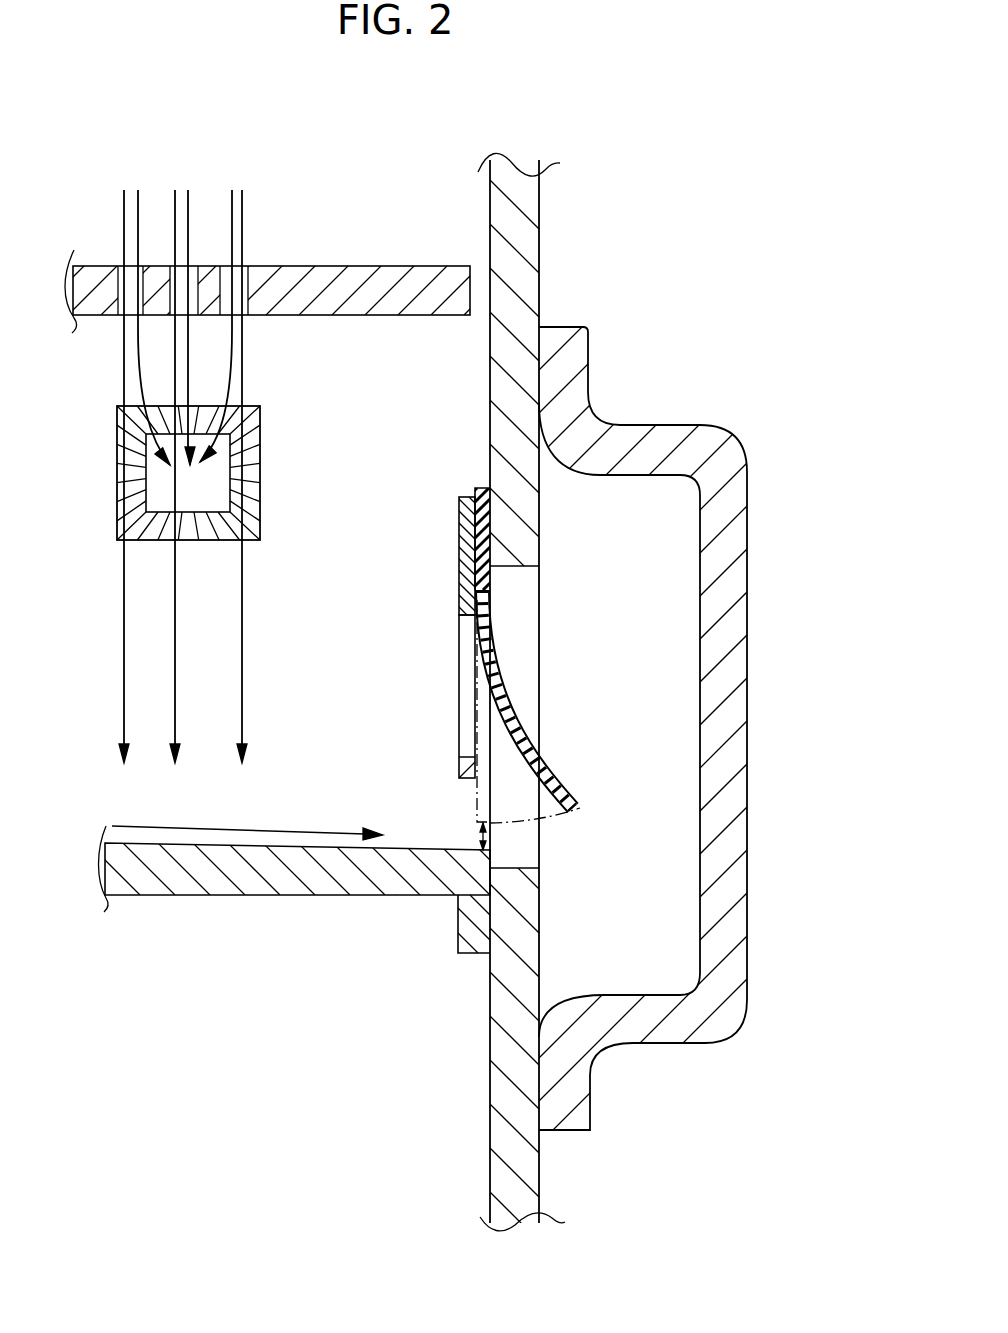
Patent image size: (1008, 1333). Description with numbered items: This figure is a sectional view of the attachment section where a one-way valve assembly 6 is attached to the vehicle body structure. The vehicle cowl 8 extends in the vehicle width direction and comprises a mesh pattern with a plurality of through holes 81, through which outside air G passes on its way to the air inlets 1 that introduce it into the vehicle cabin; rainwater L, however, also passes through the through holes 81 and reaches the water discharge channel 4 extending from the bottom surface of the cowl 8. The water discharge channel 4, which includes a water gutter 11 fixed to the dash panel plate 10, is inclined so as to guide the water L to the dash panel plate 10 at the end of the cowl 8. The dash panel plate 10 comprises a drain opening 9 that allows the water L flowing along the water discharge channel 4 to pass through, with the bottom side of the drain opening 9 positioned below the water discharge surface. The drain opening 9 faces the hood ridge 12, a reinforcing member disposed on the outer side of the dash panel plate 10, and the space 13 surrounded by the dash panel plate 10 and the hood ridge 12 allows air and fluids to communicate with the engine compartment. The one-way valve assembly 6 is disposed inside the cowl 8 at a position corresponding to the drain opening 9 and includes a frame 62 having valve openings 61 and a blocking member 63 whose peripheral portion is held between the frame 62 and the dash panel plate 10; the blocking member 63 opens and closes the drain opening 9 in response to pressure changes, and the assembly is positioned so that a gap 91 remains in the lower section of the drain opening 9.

The air inlet 1 is at (133, 465).
The water discharge channel 4 is at (162, 838).
The one-way valve assembly 6 is at (451, 637).
The vehicle cowl 8 is at (333, 275).
The drain opening 9 is at (513, 568).
The dash panel plate 10 is at (510, 212).
The water gutter 11 is at (232, 866).
The hood ridge 12 is at (735, 585).
The engine compartment communication space 13 is at (643, 690).
The valve opening 61 is at (408, 696).
The frame 62 is at (459, 568).
The blocking member 63 is at (497, 683).
The through hole 81 is at (143, 273).
The gap 91 is at (483, 836).
The outside air G is at (136, 190).
The rainwater L is at (121, 205).